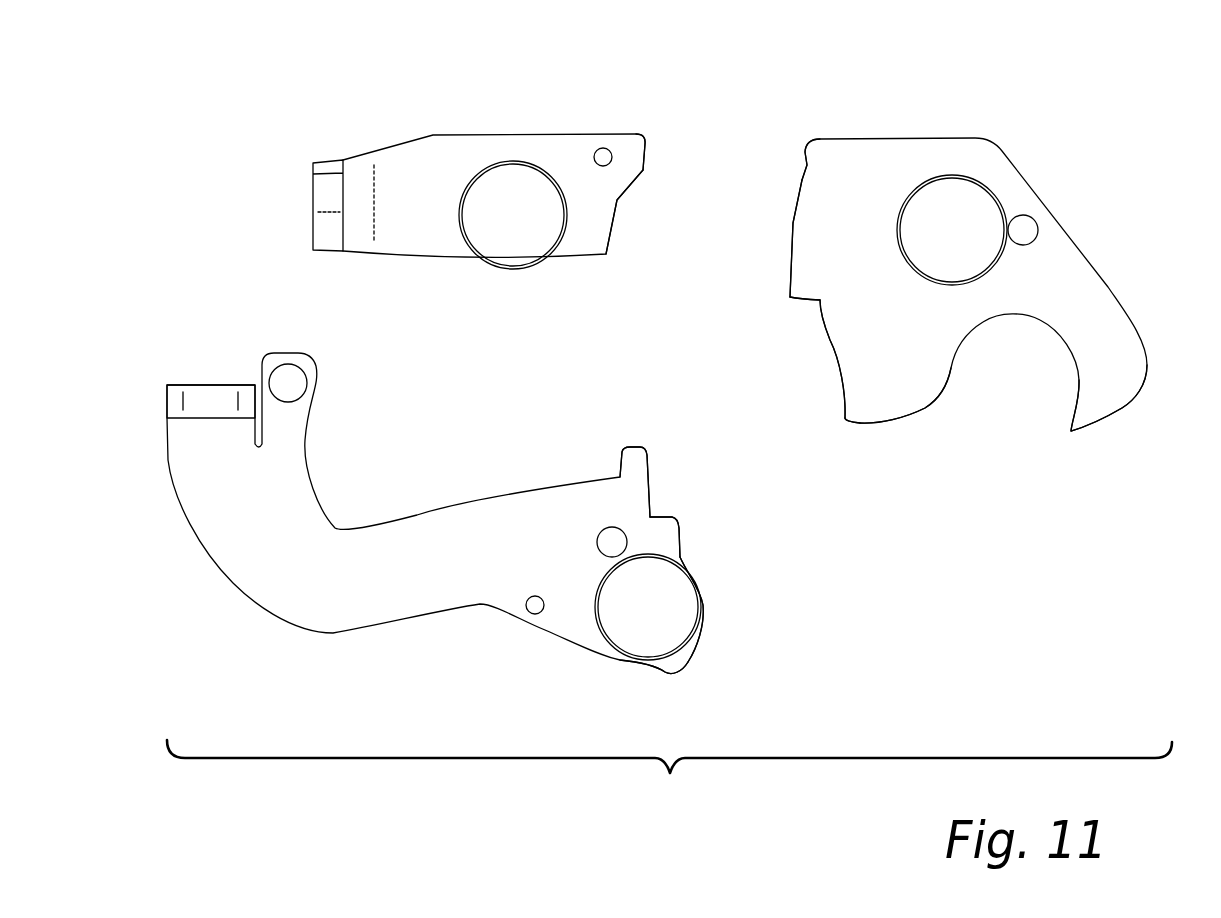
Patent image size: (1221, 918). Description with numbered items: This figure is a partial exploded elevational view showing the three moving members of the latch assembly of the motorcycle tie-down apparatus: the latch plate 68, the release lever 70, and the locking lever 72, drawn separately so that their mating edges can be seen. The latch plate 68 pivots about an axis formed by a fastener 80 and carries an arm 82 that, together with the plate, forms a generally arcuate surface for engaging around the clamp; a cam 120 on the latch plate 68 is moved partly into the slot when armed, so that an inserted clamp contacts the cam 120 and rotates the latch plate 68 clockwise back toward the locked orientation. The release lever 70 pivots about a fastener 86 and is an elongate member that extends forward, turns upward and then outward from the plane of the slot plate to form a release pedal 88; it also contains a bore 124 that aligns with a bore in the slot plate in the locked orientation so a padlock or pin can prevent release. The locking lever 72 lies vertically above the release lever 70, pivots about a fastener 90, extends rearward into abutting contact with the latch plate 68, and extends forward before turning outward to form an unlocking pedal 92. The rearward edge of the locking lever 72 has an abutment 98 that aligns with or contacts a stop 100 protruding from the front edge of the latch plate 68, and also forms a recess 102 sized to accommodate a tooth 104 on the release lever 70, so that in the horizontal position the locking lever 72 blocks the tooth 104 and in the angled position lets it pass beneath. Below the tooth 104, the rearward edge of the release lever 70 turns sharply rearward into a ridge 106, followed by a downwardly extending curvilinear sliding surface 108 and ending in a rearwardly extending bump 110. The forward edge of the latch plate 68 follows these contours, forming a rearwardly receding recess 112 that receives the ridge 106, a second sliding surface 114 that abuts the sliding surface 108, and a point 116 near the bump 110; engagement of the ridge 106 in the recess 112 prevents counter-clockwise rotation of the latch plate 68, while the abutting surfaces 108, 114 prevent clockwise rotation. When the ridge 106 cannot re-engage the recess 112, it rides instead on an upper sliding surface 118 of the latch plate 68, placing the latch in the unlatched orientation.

The latch plate 68 is at (971, 289).
The release lever 70 is at (491, 526).
The locking lever 72 is at (484, 187).
The fastener 80 is at (985, 186).
The arm 82 is at (1118, 398).
The fastener 86 is at (598, 626).
The release pedal 88 is at (206, 385).
The fastener 90 is at (470, 235).
The unlocking pedal 92 is at (319, 160).
The abutment 98 is at (648, 142).
The stop 100 is at (806, 150).
The recess 102 is at (614, 220).
The tooth 104 is at (647, 448).
The ridge 106 is at (681, 518).
The sliding surface 108 is at (704, 602).
The bump 110 is at (688, 668).
The recess 112 is at (823, 300).
The second sliding surface 114 is at (843, 367).
The point 116 is at (845, 420).
The upper sliding surface 118 is at (793, 226).
The cam 120 is at (923, 397).
The bore 124 is at (302, 369).